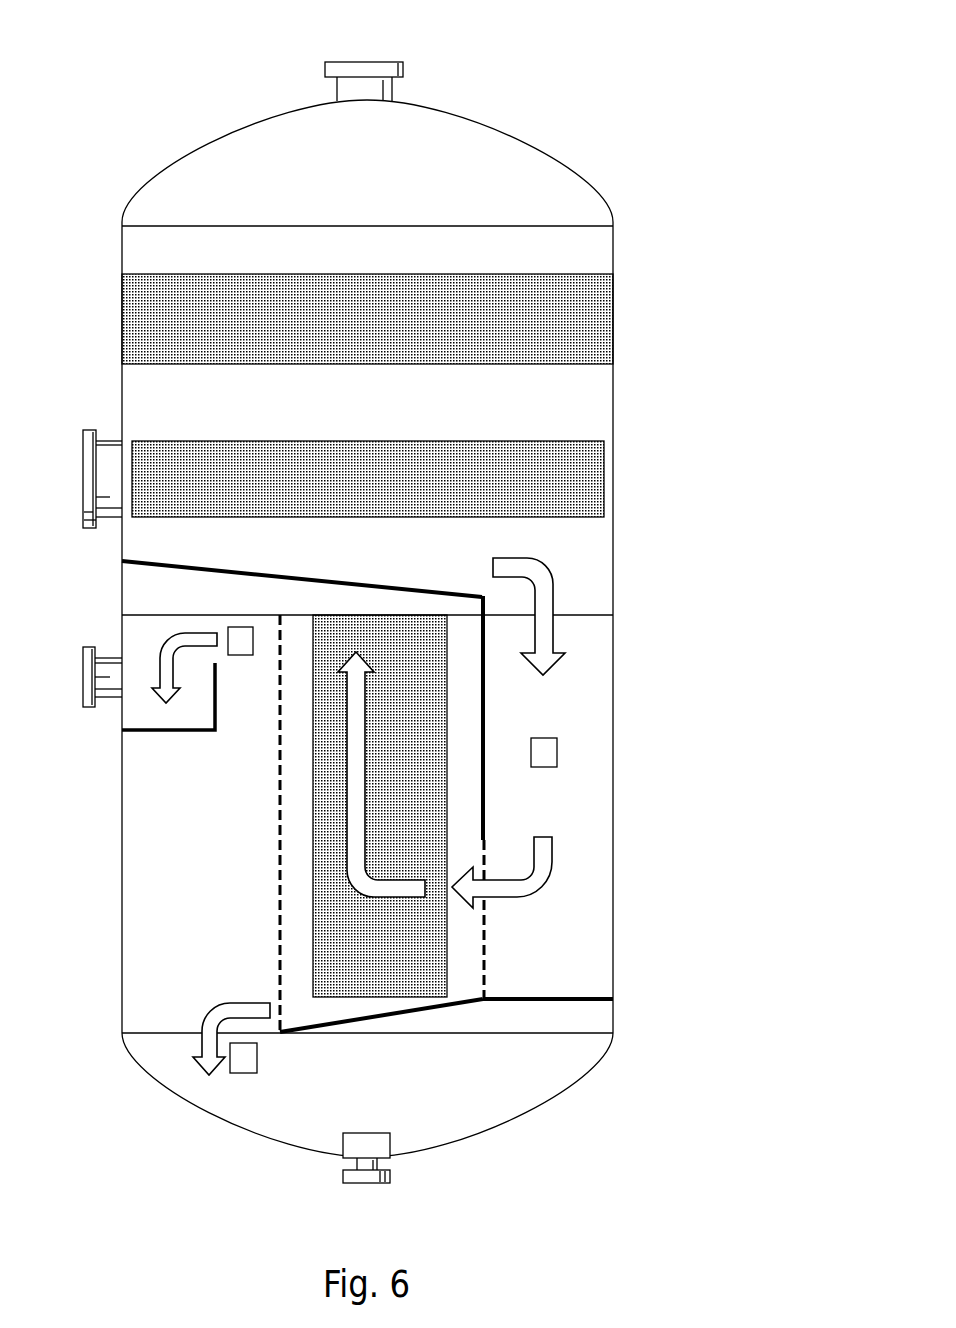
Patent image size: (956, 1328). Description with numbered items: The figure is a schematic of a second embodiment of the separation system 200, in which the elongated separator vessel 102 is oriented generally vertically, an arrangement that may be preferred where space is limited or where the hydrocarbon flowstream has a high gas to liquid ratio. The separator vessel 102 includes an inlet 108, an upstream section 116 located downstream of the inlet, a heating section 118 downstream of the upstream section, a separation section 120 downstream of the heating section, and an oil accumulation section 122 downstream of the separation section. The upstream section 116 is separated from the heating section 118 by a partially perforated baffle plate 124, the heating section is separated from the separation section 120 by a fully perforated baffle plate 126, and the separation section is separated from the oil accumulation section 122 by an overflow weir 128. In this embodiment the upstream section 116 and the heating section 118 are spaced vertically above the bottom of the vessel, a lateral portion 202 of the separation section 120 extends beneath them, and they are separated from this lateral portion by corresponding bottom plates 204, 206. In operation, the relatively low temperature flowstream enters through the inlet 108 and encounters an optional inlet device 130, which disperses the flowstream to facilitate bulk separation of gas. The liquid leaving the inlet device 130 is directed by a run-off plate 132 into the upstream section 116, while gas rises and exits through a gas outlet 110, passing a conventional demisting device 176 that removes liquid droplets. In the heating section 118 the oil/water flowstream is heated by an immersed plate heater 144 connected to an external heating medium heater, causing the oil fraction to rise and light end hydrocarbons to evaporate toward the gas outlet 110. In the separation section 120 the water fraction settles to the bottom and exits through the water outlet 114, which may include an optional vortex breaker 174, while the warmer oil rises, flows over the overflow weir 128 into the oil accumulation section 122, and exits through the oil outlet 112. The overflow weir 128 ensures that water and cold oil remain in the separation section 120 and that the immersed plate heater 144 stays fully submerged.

The separator vessel 102 is at (613, 407).
The inlet 108 is at (95, 430).
The gas outlet 110 is at (405, 70).
The oil outlet 112 is at (92, 710).
The water outlet 114 is at (343, 1175).
The upstream section 116 is at (593, 843).
The heating section 118 is at (473, 960).
The separation section 120 is at (147, 910).
The oil accumulation section 122 is at (167, 720).
The partially perforated baffle plate 124 is at (485, 713).
The fully perforated baffle plate 126 is at (280, 848).
The overflow weir 128 is at (218, 710).
The inlet device 130 is at (370, 448).
The run-off plate 132 is at (240, 570).
The immersed plate heater 144 is at (438, 815).
The vortex breaker 174 is at (392, 1144).
The demisting device 176 is at (361, 282).
The separation system 200 is at (533, 75).
The lateral portion 202 is at (368, 1093).
The bottom plate 204 is at (560, 1003).
The bottom plate 206 is at (440, 1010).